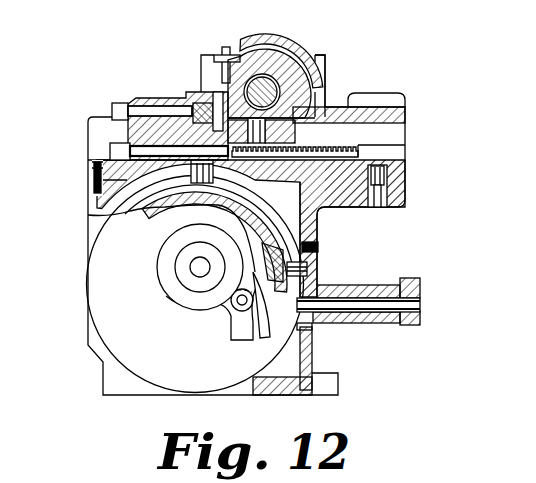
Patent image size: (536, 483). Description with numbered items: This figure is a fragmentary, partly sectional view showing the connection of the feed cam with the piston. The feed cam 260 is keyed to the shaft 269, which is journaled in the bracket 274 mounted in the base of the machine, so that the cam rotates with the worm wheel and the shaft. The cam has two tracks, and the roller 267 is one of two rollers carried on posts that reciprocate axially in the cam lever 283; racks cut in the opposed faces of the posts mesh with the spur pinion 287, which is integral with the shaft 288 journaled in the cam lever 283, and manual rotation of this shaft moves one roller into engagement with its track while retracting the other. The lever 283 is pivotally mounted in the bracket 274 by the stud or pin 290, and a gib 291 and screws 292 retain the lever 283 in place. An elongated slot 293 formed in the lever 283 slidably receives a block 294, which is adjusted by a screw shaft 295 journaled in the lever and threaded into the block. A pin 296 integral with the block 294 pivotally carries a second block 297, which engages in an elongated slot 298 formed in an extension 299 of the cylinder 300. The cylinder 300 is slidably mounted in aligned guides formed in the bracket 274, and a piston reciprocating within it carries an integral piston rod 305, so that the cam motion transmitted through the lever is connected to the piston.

The feed cam 260 is at (267, 219).
The roller 267 is at (141, 208).
The shaft 269 is at (195, 271).
The bracket 274 is at (312, 362).
The cam lever 283 is at (167, 98).
The spur pinion 287 is at (201, 103).
The shaft 288 is at (115, 105).
The stud or pin 290 is at (378, 197).
The gib 291 is at (108, 157).
The screws 292 is at (93, 176).
The elongated slot 293 is at (390, 152).
The block 294 is at (300, 141).
The screw shaft 295 is at (357, 143).
The pin 296 is at (290, 110).
The second block 297 is at (302, 105).
The elongated slot 298 is at (398, 108).
The extension 299 is at (295, 85).
The cylinder 300 is at (232, 66).
The piston rod 305 is at (226, 50).